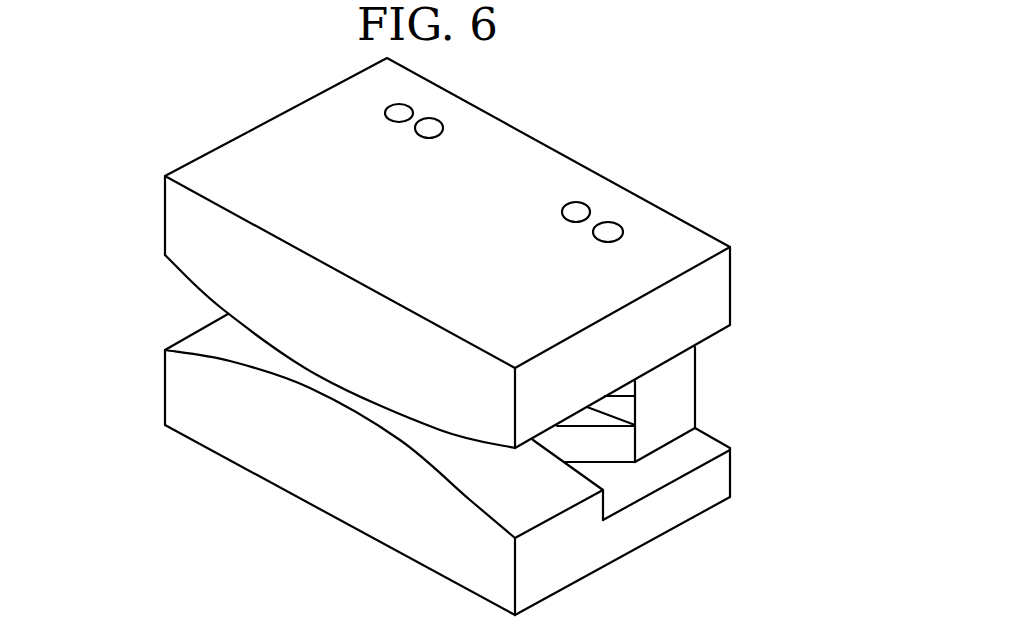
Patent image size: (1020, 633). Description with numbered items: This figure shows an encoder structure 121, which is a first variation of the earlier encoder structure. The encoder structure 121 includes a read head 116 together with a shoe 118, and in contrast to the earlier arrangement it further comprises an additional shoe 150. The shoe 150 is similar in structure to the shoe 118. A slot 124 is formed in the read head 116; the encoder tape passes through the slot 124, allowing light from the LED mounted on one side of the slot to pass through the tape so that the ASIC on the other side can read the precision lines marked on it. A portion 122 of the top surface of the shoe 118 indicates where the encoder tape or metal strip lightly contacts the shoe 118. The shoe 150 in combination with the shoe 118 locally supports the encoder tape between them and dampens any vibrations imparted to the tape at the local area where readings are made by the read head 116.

The encoder structure 121 is at (170, 133).
The shoe 150 is at (492, 184).
The portion 122 is at (307, 384).
The shoe 118 is at (243, 471).
The read head 116 is at (697, 402).
The slot 124 is at (596, 426).